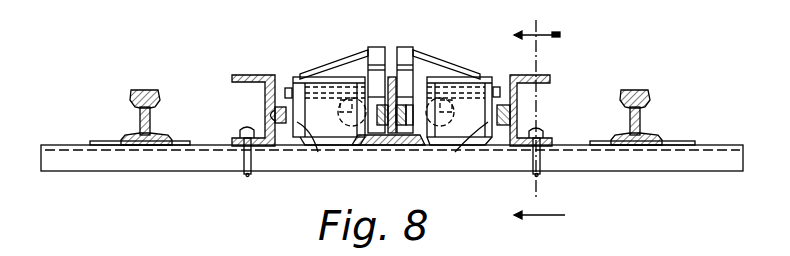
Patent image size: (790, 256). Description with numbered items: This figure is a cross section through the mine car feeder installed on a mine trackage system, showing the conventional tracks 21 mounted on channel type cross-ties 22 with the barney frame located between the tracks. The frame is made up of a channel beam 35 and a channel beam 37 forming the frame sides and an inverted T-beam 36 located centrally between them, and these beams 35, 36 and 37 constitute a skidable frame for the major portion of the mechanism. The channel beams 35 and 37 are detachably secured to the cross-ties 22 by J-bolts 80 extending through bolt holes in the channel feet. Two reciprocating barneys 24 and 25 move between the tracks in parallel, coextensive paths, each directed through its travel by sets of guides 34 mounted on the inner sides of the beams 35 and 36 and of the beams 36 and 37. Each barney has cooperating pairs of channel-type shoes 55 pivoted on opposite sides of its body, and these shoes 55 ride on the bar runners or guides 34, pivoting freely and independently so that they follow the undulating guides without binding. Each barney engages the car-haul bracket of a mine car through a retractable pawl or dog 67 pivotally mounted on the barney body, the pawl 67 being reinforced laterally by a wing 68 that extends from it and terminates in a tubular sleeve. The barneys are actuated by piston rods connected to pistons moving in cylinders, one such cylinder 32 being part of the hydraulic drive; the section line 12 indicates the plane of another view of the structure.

The section line 12- 12 is at (545, 125).
The tracks 21 is at (147, 90).
The channel type cross-ties 22 is at (205, 160).
The barney 24 is at (300, 77).
The barney 25 is at (480, 77).
The cylinder 32 is at (278, 128).
The guides 34 is at (386, 125).
The rail (guide beam) 35 is at (268, 75).
The rail (inverted T-beam) 36 is at (391, 77).
The rail (guide beam) 37 is at (545, 76).
The channel-type shoes 55 is at (392, 145).
The retractable pawl or dog 67 is at (374, 47).
The wing 68 is at (350, 62).
The J-bolts 80 is at (247, 176).